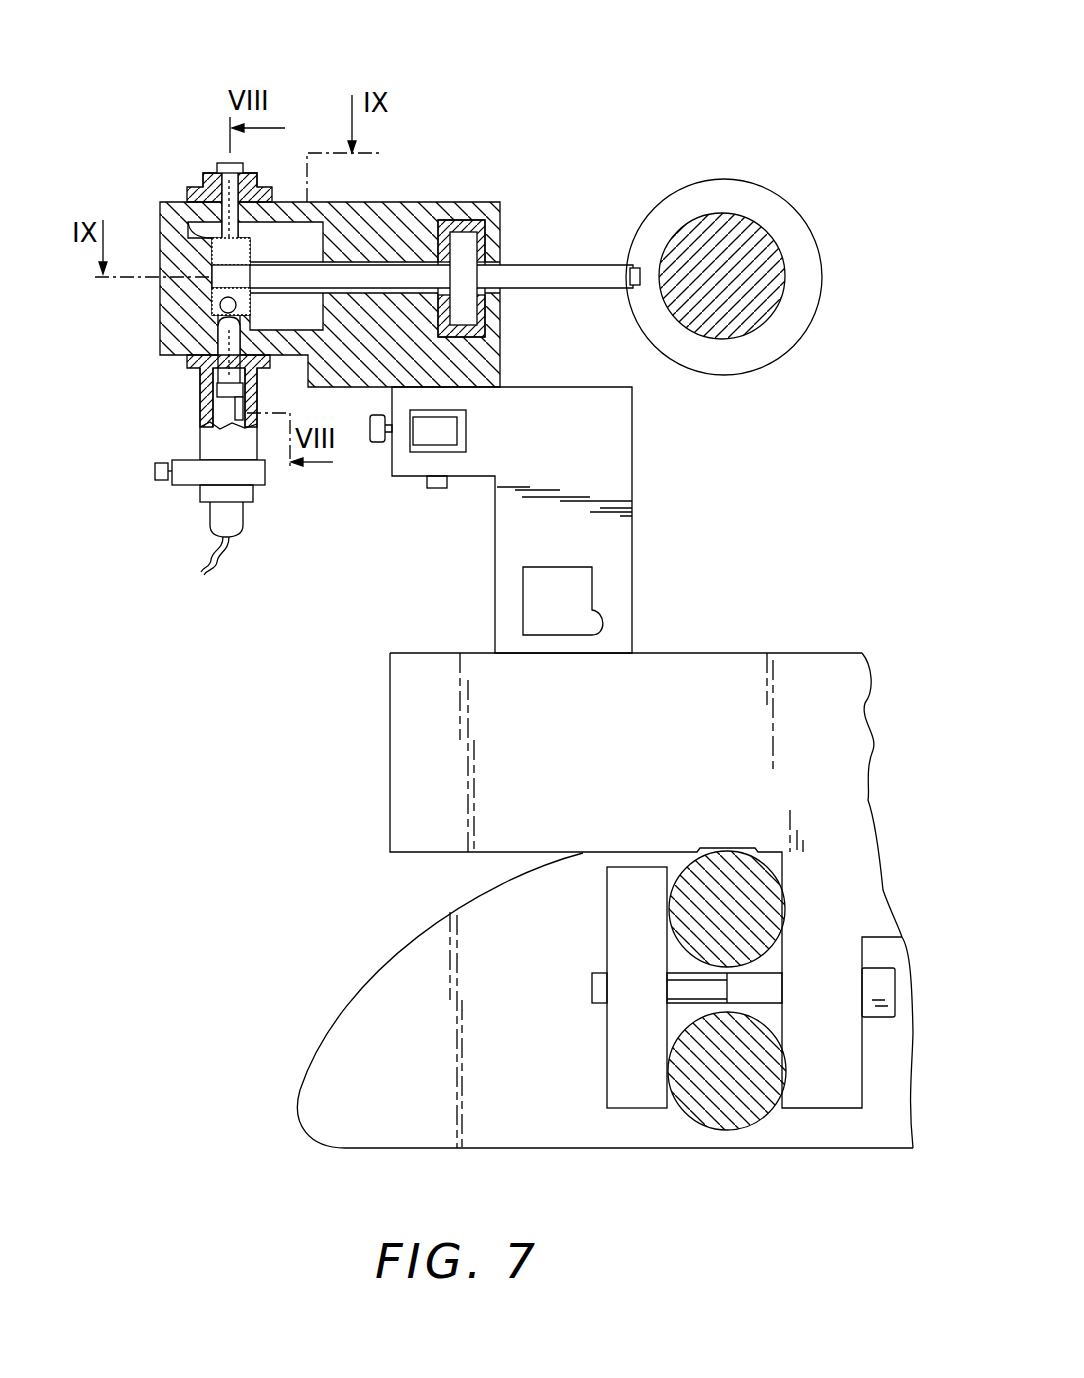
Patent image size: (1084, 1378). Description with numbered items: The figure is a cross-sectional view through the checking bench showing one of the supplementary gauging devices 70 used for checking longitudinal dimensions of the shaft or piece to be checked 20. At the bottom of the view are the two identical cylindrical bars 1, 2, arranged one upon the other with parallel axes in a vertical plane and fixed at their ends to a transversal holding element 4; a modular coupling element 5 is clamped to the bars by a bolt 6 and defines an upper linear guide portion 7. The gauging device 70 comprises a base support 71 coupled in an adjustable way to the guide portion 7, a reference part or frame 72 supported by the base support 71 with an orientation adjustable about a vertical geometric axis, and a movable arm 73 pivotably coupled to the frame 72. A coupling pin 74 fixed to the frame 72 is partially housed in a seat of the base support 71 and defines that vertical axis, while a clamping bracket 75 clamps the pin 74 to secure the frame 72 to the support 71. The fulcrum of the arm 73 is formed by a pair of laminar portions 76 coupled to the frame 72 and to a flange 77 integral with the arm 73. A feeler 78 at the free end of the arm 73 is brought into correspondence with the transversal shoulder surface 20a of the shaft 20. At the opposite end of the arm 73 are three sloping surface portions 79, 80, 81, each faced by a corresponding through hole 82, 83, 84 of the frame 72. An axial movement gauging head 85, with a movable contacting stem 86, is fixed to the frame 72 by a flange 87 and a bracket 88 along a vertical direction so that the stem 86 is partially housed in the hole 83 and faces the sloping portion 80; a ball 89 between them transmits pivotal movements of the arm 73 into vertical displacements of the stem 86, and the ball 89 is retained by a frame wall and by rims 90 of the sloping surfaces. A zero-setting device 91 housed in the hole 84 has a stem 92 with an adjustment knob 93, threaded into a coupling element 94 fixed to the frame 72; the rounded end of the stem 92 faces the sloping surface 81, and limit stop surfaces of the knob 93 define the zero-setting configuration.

The cylindrical bar 1 is at (680, 910).
The cylindrical bar 2 is at (703, 1047).
The transversal holding element 4 is at (383, 972).
The modular coupling element 5 is at (407, 737).
The bolt 6 is at (620, 1026).
The linear guide portion 7 is at (481, 560).
The piece to be checked 20 is at (735, 228).
The transversal shoulder surface 20a is at (698, 198).
The supplementary gauging device 70 is at (350, 332).
The base support 71 is at (523, 530).
The frame 72 is at (482, 205).
The movable arm 73 is at (555, 270).
The coupling pin 74 is at (437, 490).
The clamping bracket 75 is at (377, 445).
The laminar portion 76 is at (442, 250).
The flange 77 is at (460, 244).
The feeler 78 is at (636, 262).
The sloping surface portion 79 is at (224, 244).
The sloping surface portion 80 is at (220, 303).
The sloping surface portion 81 is at (213, 228).
The through hole 82 is at (212, 275).
The through hole 83 is at (187, 364).
The through hole 84 is at (200, 185).
The axial movement gauging head 85 is at (237, 517).
The movable contacting stem 86 is at (200, 385).
The flange 87 is at (213, 437).
The bracket 88 is at (190, 480).
The ball 89 is at (250, 300).
The rim 90 is at (212, 294).
The zero-setting device 91 is at (222, 130).
The stem 92 is at (256, 188).
The adjustment knob 93 is at (220, 160).
The coupling element 94 is at (208, 173).